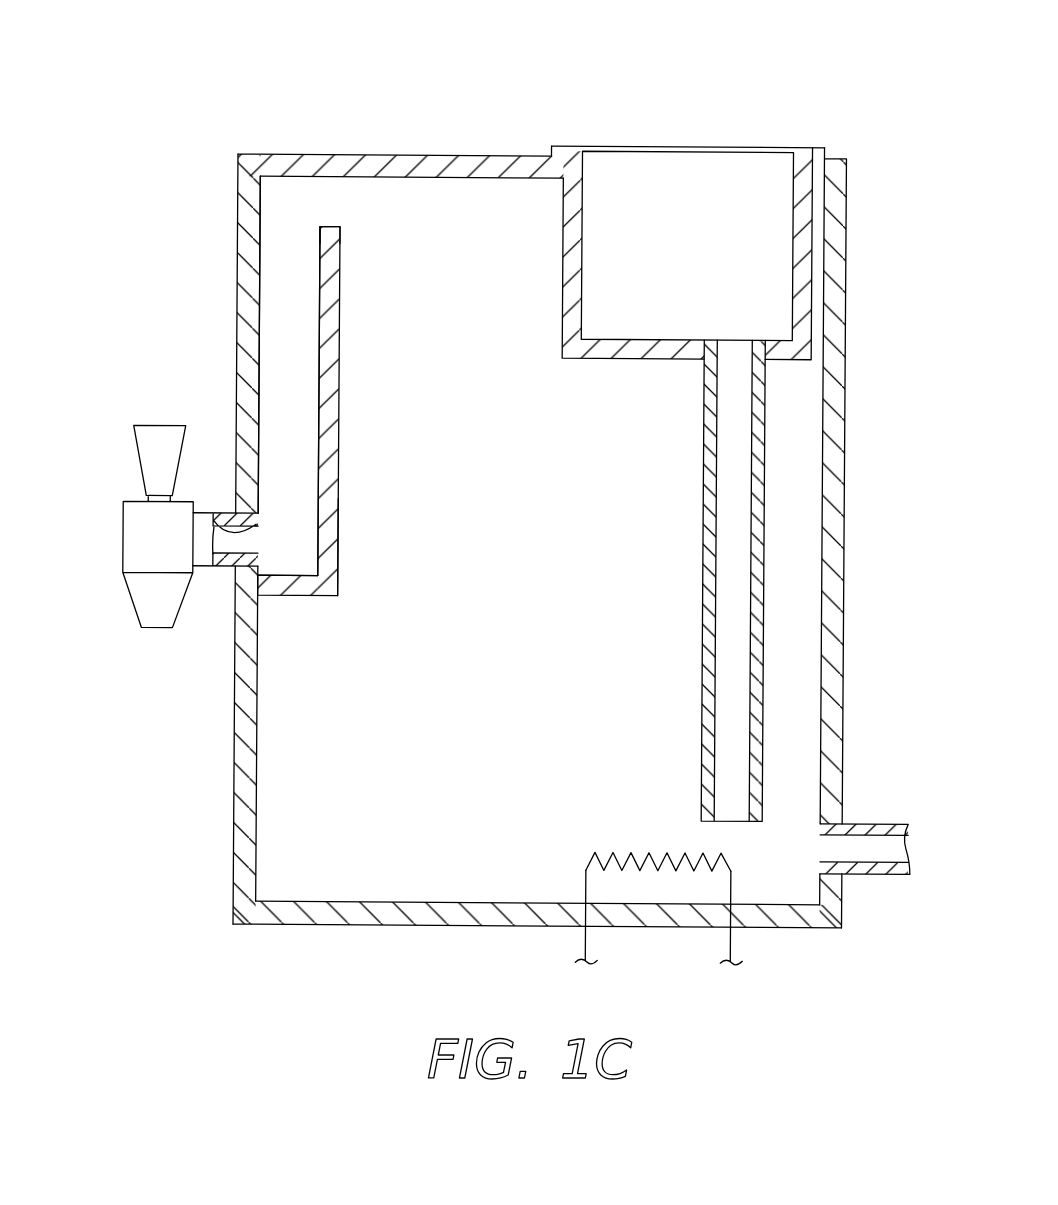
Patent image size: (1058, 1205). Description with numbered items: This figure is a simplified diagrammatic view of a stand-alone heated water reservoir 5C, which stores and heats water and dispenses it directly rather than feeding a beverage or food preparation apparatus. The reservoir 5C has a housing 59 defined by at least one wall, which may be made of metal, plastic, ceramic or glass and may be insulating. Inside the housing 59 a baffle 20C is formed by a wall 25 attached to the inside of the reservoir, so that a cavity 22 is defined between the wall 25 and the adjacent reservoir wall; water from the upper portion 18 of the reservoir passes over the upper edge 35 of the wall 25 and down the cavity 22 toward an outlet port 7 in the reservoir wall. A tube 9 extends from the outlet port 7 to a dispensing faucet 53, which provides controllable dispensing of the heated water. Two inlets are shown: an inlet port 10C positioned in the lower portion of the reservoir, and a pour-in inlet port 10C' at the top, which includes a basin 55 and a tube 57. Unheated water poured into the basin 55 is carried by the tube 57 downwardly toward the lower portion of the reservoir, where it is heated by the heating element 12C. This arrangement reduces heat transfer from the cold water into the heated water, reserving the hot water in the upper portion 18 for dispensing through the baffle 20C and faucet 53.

The heated water reservoir 5C is at (412, 84).
The inlet port 10C' is at (689, 92).
The upper edge 35 is at (329, 228).
The basin 55 is at (561, 234).
The upper portion 18 is at (845, 271).
The cavity 22 is at (297, 390).
The wall 25 is at (330, 425).
The outlet port 7 is at (232, 530).
The dispensing faucet 53 is at (100, 530).
The baffle 20C is at (348, 515).
The tube 9 is at (221, 572).
The tube 57 is at (700, 520).
The housing 59 is at (229, 721).
The heating element 12C is at (588, 884).
The inlet port 10C is at (864, 888).